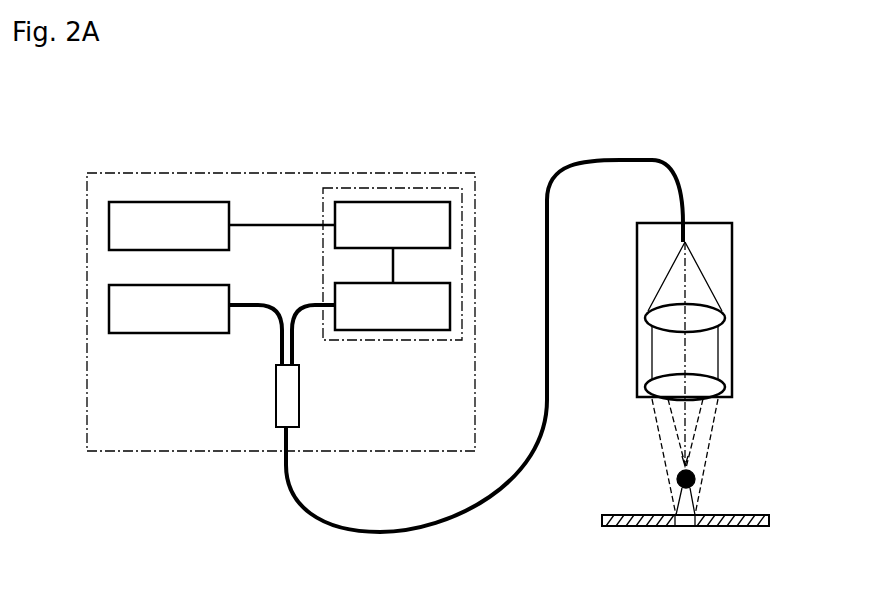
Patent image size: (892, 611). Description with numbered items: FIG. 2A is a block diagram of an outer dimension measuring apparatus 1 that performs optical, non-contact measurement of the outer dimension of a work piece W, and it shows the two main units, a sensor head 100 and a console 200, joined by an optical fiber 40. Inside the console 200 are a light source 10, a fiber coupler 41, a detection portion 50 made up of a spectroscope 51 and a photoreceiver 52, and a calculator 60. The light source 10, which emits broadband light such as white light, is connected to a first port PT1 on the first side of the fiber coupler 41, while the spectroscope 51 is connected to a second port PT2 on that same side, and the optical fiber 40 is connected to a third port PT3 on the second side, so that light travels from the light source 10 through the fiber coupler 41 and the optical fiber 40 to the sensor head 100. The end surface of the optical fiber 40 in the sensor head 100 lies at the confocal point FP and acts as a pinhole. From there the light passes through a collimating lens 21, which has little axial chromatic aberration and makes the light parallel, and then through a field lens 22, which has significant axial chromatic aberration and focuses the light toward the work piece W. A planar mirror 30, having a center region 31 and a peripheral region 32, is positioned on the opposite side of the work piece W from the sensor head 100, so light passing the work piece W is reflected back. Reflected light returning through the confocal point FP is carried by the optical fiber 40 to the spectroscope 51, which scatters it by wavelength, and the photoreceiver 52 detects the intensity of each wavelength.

The outer dimension measuring apparatus 1 is at (703, 133).
The light source 10 is at (109, 308).
The collimating lens 21 is at (713, 318).
The field lens 22 is at (713, 388).
The mirror 30 is at (718, 547).
The center region 31 is at (688, 528).
The peripheral region 32 is at (650, 527).
The optical fiber 40 is at (617, 160).
The fiber coupler 41 is at (291, 413).
The detection portion 50 is at (431, 188).
The spectroscope 51 is at (450, 303).
The photoreceiver 52 is at (450, 222).
The calculator 60 is at (109, 228).
The sensor head 100 is at (720, 318).
The console 200 is at (310, 172).
The confocal point FP is at (687, 242).
The first port PT1 is at (255, 337).
The second port PT2 is at (315, 337).
The third port PT3 is at (257, 444).
The work piece W is at (696, 477).